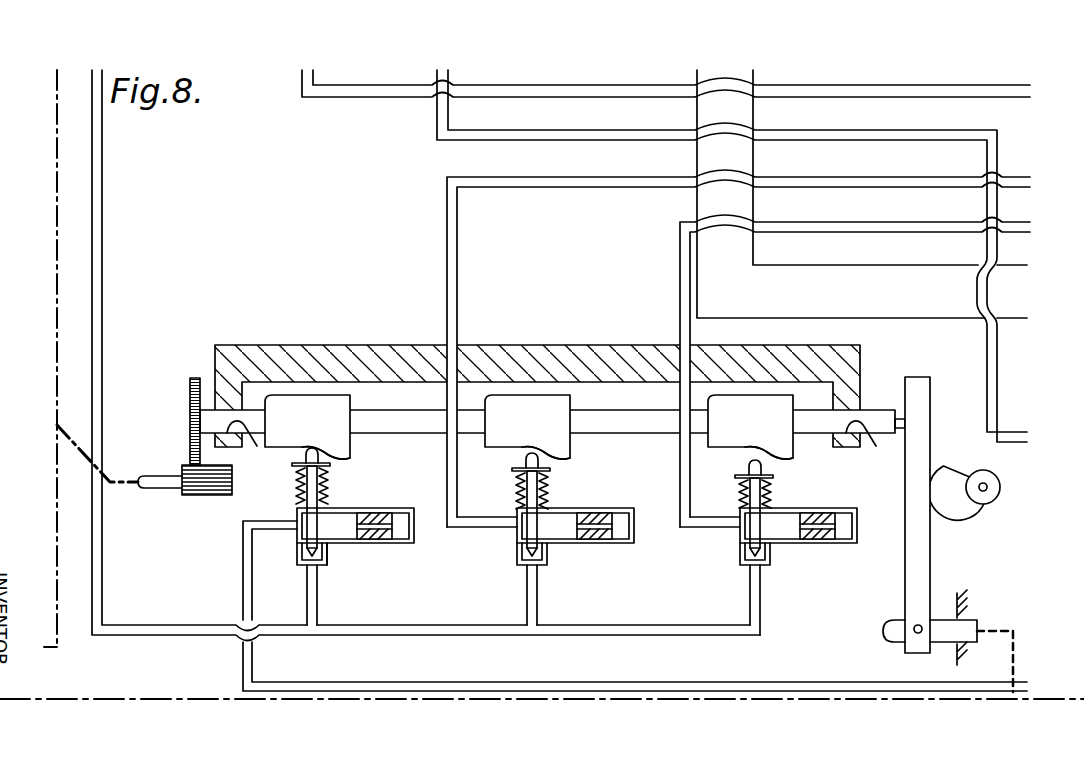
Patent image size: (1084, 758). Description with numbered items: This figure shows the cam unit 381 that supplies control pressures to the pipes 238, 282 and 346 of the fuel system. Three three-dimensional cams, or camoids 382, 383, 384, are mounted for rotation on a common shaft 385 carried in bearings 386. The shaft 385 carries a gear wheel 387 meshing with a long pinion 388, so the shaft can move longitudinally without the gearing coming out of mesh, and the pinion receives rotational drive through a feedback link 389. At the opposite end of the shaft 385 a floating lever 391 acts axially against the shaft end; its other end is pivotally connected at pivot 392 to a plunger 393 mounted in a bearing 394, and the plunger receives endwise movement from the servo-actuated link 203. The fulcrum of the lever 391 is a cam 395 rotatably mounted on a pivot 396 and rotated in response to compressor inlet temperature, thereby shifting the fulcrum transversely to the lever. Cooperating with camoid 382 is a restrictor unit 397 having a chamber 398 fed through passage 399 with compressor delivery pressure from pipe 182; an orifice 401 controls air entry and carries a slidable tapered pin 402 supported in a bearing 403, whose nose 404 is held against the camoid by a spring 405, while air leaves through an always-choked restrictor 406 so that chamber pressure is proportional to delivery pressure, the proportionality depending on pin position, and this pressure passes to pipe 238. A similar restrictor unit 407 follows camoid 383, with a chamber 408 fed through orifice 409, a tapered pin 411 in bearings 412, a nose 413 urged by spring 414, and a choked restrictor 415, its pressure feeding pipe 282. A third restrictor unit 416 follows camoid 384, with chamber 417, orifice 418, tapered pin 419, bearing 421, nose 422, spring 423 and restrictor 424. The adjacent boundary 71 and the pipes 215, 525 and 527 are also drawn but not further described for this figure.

The housing wall 71 is at (45, 650).
The pipe 182 is at (103, 140).
The link 203 is at (160, 697).
The conduit 215 is at (713, 105).
The pipe 238 is at (243, 591).
The pipe 282 is at (952, 184).
The pipe 346 is at (867, 231).
The cam unit 381 is at (214, 346).
The camoid 382 is at (342, 446).
The camoid 383 is at (560, 448).
The camoid 384 is at (783, 449).
The common shaft 385 is at (620, 422).
The bearings 386 is at (247, 446).
The gear wheel 387 is at (188, 411).
The long pinion 388 is at (202, 497).
The feedback link 389 is at (126, 481).
The floating lever 391 is at (912, 563).
The pivot 392 is at (915, 633).
The plunger 393 is at (968, 630).
The bearing 394 is at (980, 618).
The cam 395 is at (960, 508).
The pivot 396 is at (985, 492).
The restrictor unit 397 is at (334, 556).
The chamber 398 is at (349, 537).
The passage 399 is at (304, 565).
The orifice 401 is at (300, 548).
The tapered pin 402 is at (310, 538).
The bearing 403 is at (298, 500).
The nose 404 is at (313, 452).
The spring 405 is at (328, 476).
The restrictor 406 is at (388, 530).
The restrictor unit 407 is at (554, 555).
The chamber 408 is at (564, 529).
The orifice 409 is at (524, 534).
The tapered pin 411 is at (530, 545).
The bearings 412 is at (522, 508).
The nose 413 is at (534, 457).
The spring 414 is at (548, 478).
The restrictor 415 is at (609, 527).
The restrictor unit 416 is at (779, 555).
The chamber 417 is at (793, 533).
The orifice 418 is at (745, 546).
The tapered pin 419 is at (750, 554).
The bearing 421 is at (742, 498).
The nose 422 is at (756, 462).
The spring 423 is at (770, 486).
The restrictor 424 is at (832, 527).
The conduit 525 is at (353, 93).
The conduit 527 is at (507, 138).